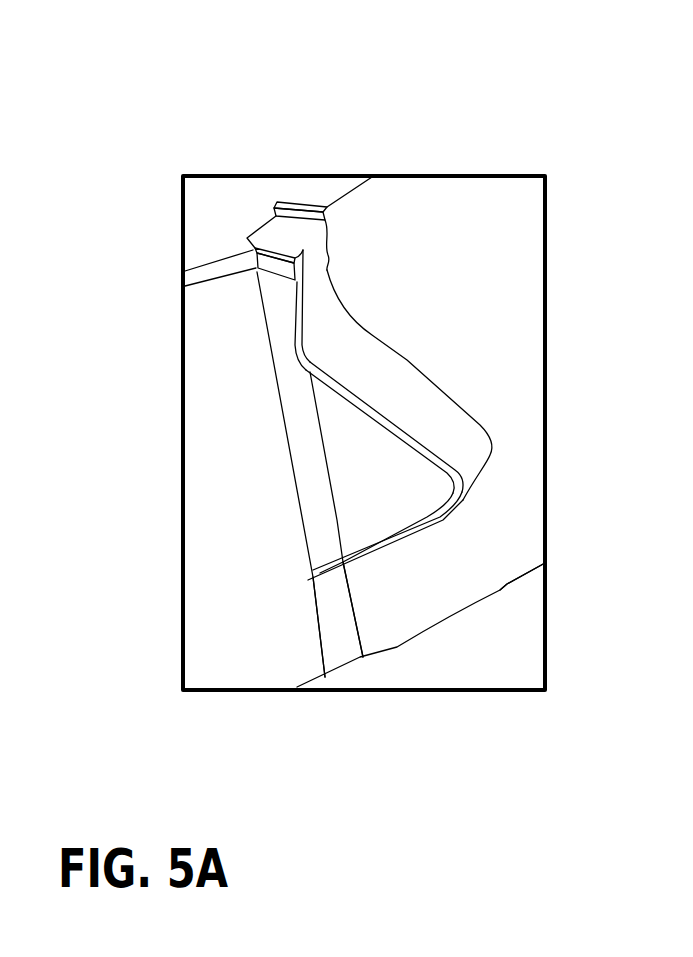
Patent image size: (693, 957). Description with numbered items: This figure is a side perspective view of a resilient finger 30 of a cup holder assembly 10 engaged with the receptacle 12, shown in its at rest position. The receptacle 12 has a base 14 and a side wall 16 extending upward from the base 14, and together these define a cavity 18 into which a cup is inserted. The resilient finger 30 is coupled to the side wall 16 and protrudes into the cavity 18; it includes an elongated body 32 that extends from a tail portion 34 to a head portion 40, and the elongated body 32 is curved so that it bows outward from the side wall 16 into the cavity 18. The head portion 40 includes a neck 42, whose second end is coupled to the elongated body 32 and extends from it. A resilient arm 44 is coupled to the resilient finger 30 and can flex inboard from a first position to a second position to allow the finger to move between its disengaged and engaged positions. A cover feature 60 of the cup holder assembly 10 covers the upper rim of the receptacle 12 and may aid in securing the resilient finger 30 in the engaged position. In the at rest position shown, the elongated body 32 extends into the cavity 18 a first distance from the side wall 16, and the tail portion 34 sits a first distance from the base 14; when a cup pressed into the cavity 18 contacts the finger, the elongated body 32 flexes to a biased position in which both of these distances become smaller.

The cup holder assembly 10 is at (396, 166).
The receptacle 12 is at (467, 235).
The base 14 is at (467, 650).
The side wall 16 is at (298, 438).
The cavity 18 is at (498, 524).
The resilient finger 30 is at (440, 376).
The elongated body 32 is at (453, 427).
The tail portion 34 is at (313, 575).
The head portion 40 is at (237, 232).
The neck 42 is at (296, 233).
The resilient arm 44 is at (320, 206).
The cover feature 60 is at (222, 207).